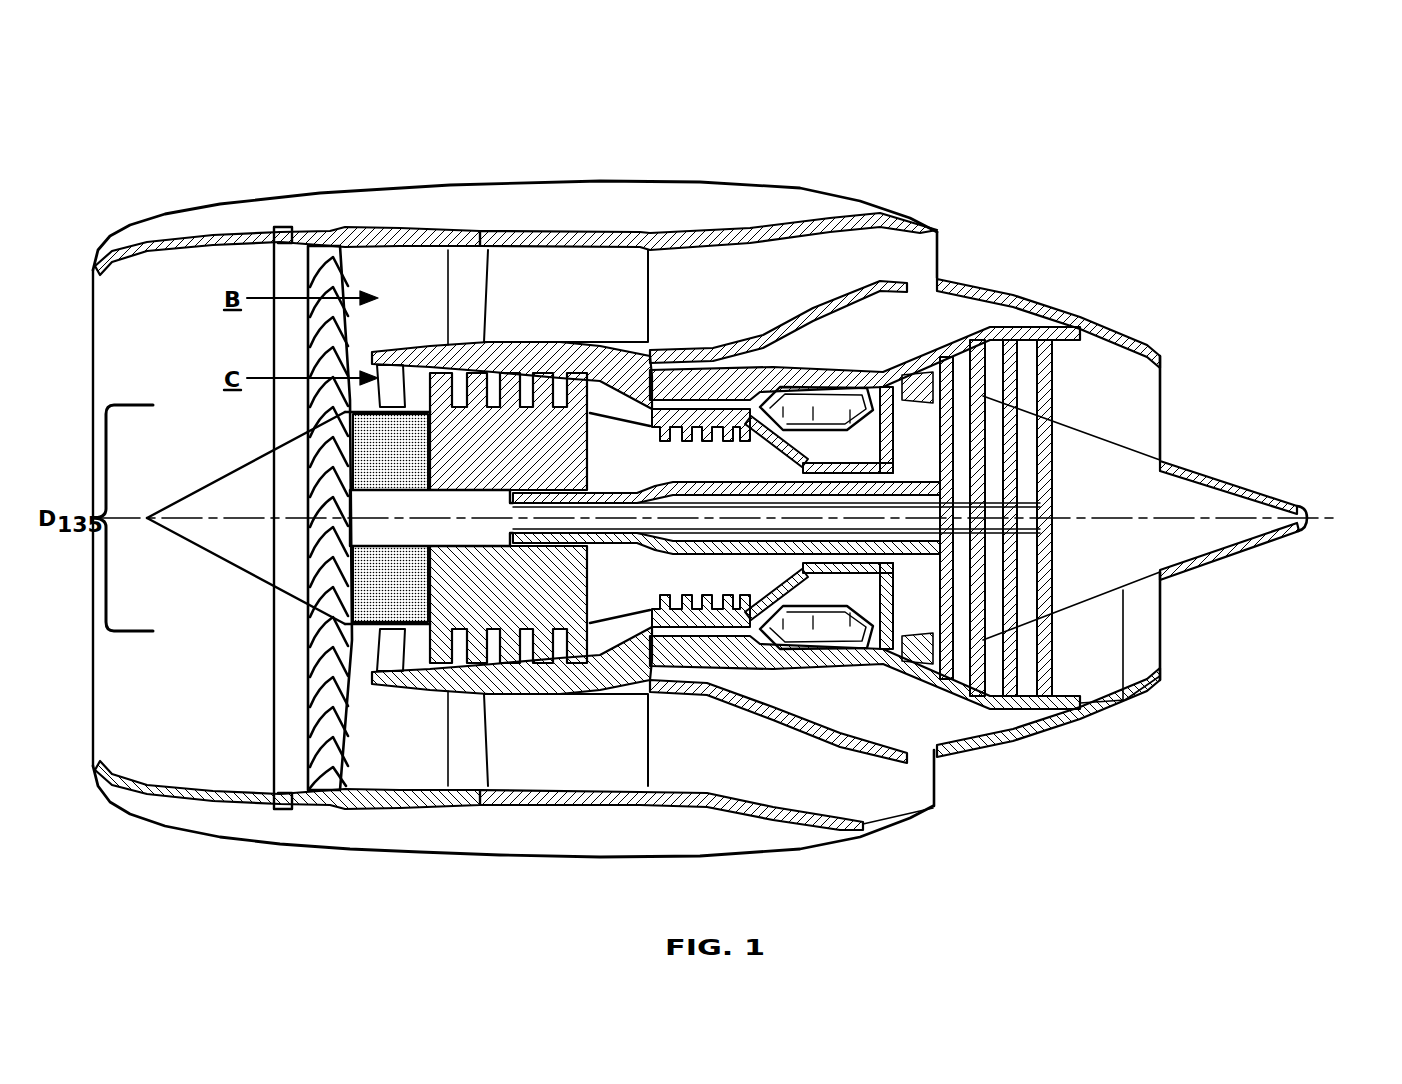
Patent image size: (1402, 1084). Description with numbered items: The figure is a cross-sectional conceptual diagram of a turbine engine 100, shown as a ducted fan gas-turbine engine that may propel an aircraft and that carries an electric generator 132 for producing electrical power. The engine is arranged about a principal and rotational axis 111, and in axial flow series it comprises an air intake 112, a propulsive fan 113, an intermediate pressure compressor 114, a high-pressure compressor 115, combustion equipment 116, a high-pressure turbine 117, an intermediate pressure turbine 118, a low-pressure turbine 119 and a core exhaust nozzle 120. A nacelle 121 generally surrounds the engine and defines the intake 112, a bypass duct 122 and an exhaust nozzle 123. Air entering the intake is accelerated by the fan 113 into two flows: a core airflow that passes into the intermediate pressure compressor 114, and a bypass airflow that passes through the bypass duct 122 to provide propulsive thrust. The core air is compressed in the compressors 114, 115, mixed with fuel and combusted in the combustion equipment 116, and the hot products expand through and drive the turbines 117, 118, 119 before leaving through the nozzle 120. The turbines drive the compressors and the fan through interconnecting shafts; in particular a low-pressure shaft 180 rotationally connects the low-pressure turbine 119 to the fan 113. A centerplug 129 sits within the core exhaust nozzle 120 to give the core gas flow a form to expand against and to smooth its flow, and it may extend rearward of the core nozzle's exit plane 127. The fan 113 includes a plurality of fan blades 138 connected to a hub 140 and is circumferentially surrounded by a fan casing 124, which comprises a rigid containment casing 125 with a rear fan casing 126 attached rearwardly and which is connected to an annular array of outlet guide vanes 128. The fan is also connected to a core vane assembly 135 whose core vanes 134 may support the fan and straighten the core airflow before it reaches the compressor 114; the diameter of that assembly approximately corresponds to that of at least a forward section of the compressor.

The turbine engine 100 is at (100, 92).
The principal and rotational axis 111 is at (1320, 517).
The air intake 112 is at (113, 357).
The propulsive fan 113 is at (285, 676).
The intermediate pressure compressor 114 is at (522, 680).
The high-pressure compressor 115 is at (700, 642).
The combustion equipment 116 is at (826, 642).
The high-pressure turbine 117 is at (885, 388).
The intermediate pressure turbine 118 is at (937, 362).
The low-pressure turbine 119 is at (1007, 357).
The core exhaust nozzle 120 is at (1143, 355).
The nacelle 121 is at (185, 182).
The bypass duct 122 is at (585, 307).
The exhaust nozzle 123 is at (918, 215).
The fan casing 124 is at (487, 222).
The rigid containment casing 125 is at (327, 240).
The rear fan casing 126 is at (620, 232).
The core nozzle's exit plane 127 is at (1163, 433).
The outlet guide vanes 128 is at (467, 303).
The centerplug 129 is at (1210, 473).
The electric generator 132 is at (413, 462).
The core vanes 134 is at (374, 368).
The core vane assembly 135 is at (348, 630).
The fan blades 138 is at (333, 416).
The hub 140 is at (240, 475).
The low-pressure shaft 180 is at (707, 512).